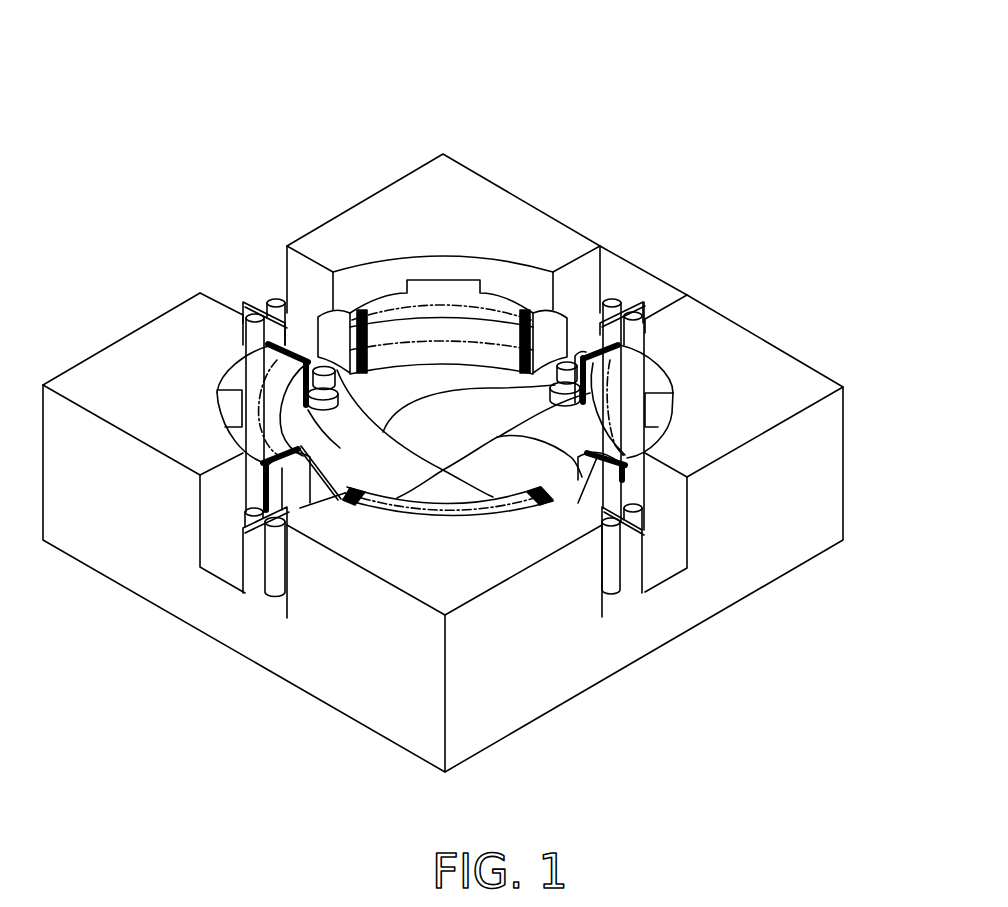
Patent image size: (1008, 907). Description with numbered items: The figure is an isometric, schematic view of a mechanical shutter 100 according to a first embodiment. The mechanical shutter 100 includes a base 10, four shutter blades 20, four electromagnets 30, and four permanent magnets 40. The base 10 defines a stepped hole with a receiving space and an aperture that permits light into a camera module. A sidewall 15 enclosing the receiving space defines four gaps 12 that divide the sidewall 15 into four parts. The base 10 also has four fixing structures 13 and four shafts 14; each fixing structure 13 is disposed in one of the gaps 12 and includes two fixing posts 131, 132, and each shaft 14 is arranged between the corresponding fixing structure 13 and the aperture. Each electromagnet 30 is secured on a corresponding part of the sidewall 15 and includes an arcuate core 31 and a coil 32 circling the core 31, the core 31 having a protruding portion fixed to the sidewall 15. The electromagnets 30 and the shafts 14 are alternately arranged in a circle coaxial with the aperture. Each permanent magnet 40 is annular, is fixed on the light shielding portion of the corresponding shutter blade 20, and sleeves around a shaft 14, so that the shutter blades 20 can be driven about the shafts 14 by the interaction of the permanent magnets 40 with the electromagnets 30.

The mechanical shutter 100 is at (470, 86).
The base 10 is at (790, 383).
The gap 12 is at (230, 562).
The fixing structure 13 is at (513, 520).
The fixing post 131 is at (607, 572).
The fixing post 132 is at (643, 532).
The shaft 14 is at (570, 356).
The sidewall 15 is at (365, 278).
The shutter blade 20 is at (440, 413).
The electromagnet 30 is at (523, 393).
The core 31 is at (662, 330).
The coil 32 is at (630, 378).
The permanent magnet 40 is at (559, 365).